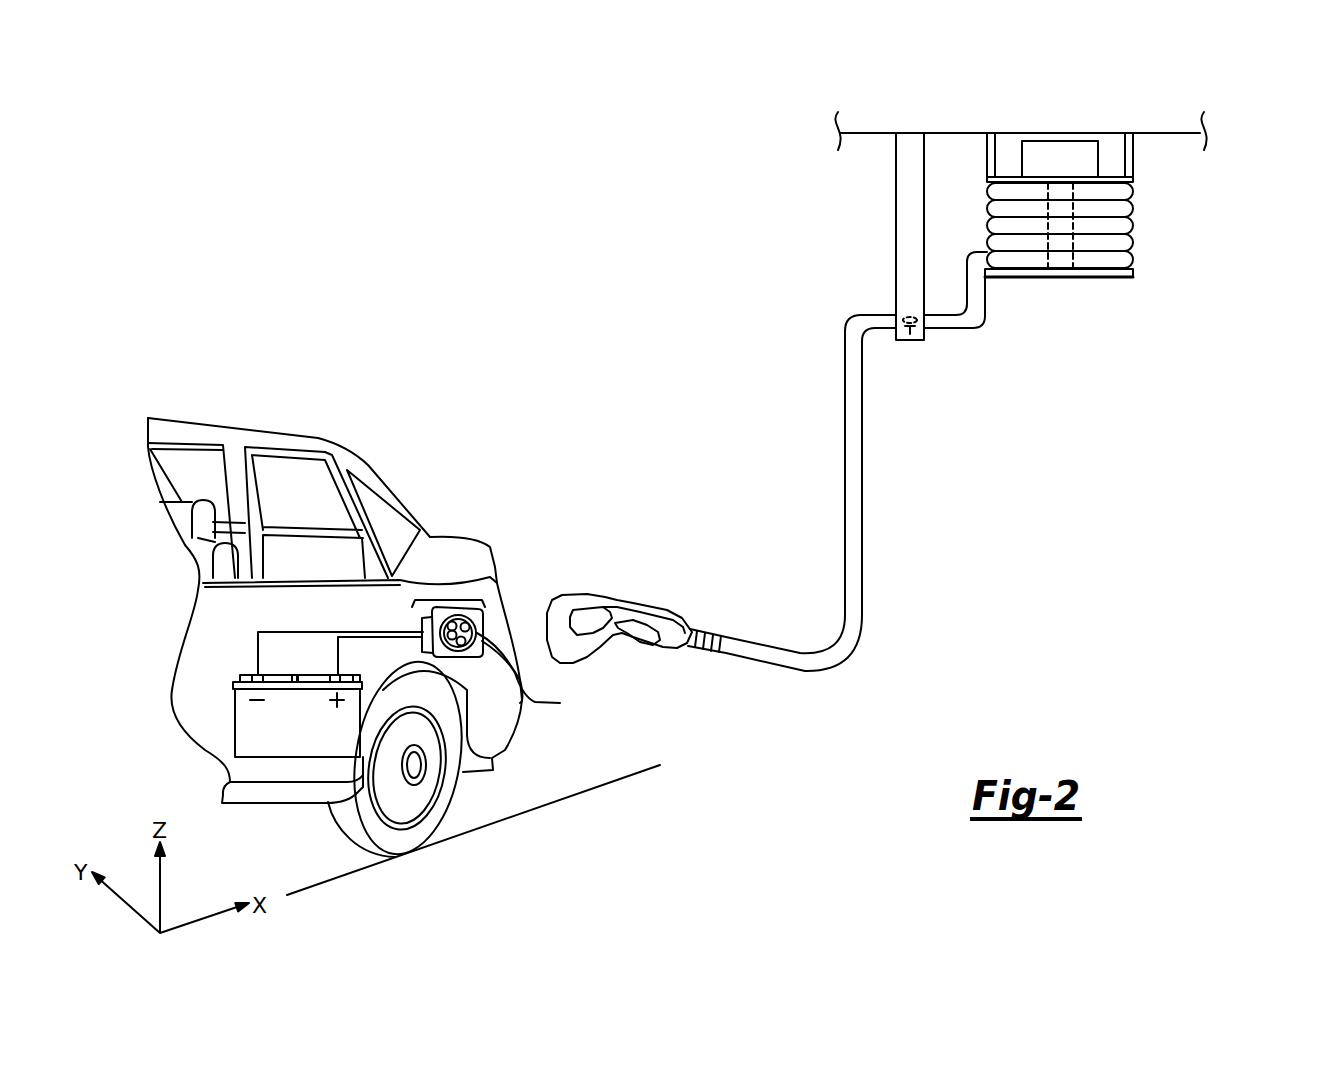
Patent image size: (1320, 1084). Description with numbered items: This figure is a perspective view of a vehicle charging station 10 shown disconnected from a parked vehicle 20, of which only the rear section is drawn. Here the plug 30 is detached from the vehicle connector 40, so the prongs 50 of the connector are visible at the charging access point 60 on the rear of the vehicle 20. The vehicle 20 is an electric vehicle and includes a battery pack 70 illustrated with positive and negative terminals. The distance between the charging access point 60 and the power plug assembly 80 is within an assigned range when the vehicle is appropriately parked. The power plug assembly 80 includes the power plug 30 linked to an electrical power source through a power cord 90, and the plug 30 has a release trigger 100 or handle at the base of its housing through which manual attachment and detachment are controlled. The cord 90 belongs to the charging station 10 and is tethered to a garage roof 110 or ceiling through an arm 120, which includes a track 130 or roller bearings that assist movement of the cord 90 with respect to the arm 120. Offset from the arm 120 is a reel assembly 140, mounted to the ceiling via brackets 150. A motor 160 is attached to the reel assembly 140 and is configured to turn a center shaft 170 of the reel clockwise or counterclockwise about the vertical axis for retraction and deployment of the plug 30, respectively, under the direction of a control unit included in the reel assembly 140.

The vehicle charging station 10 is at (1276, 99).
The vehicle 20 is at (340, 432).
The plug 30 is at (636, 644).
The vehicle connector 40 is at (485, 630).
The prongs 50 is at (424, 675).
The charging access point 60 is at (449, 601).
The battery pack 70 is at (313, 742).
The power plug assembly 80 is at (837, 461).
The power cord 90 is at (853, 442).
The release trigger 100 is at (630, 637).
The garage roof 110 is at (951, 132).
The arm 120 is at (908, 226).
The track 130 is at (910, 343).
The reel assembly 140 is at (1104, 211).
The brackets 150 is at (995, 153).
The motor 160 is at (1060, 158).
The center shaft 170 is at (1073, 245).